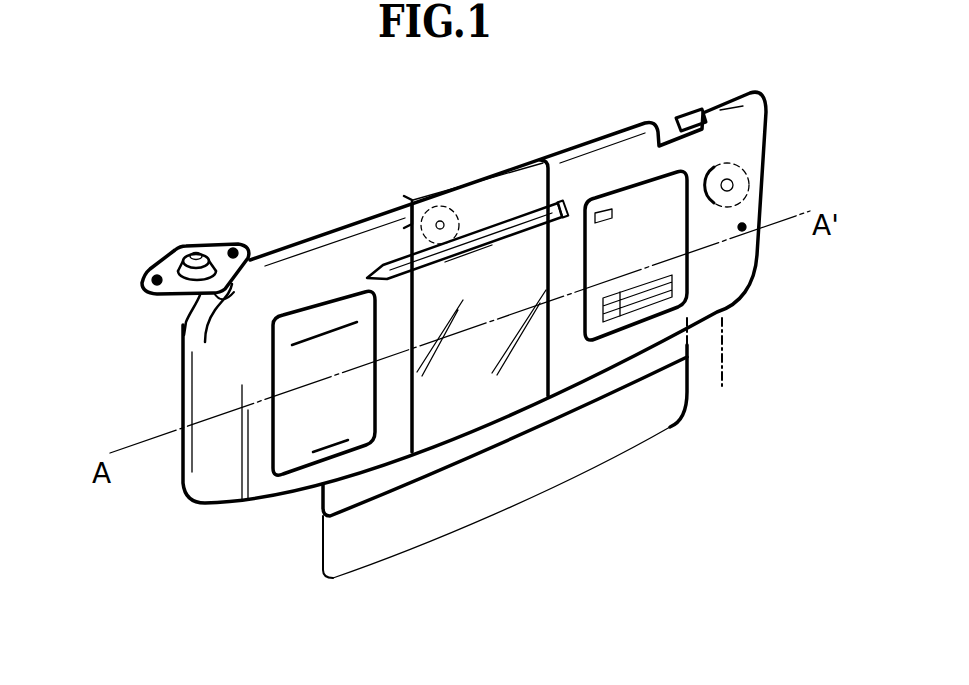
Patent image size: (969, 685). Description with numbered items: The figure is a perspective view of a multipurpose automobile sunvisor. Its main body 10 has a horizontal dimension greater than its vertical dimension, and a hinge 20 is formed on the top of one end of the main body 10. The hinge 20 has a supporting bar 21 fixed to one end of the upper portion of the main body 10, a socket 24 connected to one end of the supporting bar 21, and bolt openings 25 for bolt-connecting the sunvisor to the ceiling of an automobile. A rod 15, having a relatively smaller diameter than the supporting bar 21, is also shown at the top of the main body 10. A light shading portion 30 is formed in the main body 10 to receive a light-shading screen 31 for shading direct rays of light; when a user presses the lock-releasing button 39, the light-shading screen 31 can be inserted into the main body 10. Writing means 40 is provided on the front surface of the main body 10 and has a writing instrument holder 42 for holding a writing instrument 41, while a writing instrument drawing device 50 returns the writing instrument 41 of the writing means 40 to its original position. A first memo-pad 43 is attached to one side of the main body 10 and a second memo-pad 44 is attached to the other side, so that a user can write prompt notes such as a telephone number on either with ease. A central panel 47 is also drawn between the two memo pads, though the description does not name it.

The main body 10 is at (170, 469).
The rod 15 is at (683, 113).
The hinge 20 is at (148, 284).
The supporting bar 21 is at (200, 331).
The socket 24 is at (192, 252).
The bolt openings 25 is at (234, 248).
The light shading portion 30 is at (476, 475).
The light-shading screen 31 is at (400, 473).
The lock-releasing button 39 is at (748, 223).
The writing means 40 is at (443, 182).
The writing instrument 41 is at (520, 213).
The writing instrument holder 42 is at (463, 228).
The first memo-pad 43 is at (295, 421).
The second memo-pad 44 is at (678, 300).
The mirror panel 47 is at (480, 400).
The writing instrument drawing device 50 is at (406, 195).